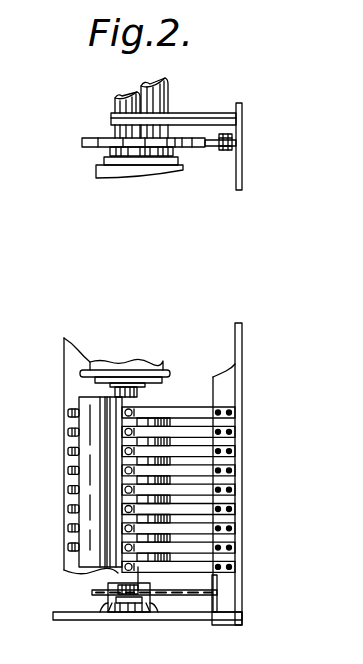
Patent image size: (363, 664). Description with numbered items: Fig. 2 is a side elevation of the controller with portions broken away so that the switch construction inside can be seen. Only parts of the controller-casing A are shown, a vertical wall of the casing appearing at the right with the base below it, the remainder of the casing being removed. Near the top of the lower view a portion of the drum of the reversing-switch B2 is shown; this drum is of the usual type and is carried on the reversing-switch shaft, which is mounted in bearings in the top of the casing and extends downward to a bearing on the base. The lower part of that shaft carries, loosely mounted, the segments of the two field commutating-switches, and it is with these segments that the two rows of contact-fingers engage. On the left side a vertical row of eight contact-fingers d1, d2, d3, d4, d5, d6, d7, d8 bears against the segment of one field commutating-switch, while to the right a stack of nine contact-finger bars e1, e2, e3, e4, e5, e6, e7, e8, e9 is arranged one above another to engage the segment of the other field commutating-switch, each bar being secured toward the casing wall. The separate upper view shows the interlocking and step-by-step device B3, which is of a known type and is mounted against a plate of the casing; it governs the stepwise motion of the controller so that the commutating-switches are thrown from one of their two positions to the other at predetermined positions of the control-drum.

The controller-casing A is at (235, 338).
The reversing-switch drum B2 is at (148, 360).
The interlocking and step-by-step device B3 is at (216, 149).
The contact-finger d1 is at (67, 413).
The contact-finger d2 is at (67, 432).
The contact-finger d3 is at (67, 451).
The contact-finger d4 is at (67, 470).
The contact-finger d5 is at (67, 490).
The contact-finger d6 is at (67, 509).
The contact-finger d7 is at (67, 528).
The contact-finger d8 is at (67, 547).
The contact-finger e1 is at (187, 405).
The contact-finger e2 is at (178, 435).
The contact-finger e3 is at (178, 455).
The contact-finger e4 is at (178, 474).
The contact-finger e5 is at (178, 493).
The contact-finger e6 is at (178, 513).
The contact-finger e7 is at (178, 532).
The contact-finger e8 is at (178, 551).
The contact-finger e9 is at (178, 567).